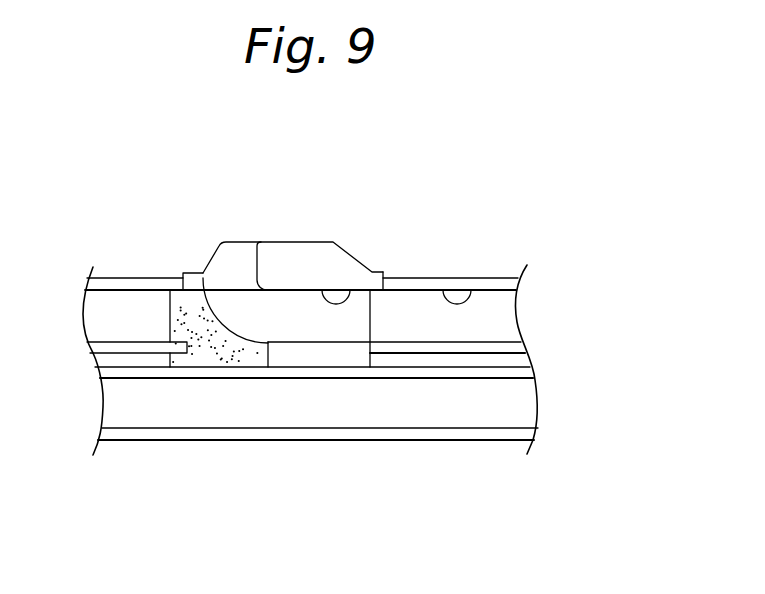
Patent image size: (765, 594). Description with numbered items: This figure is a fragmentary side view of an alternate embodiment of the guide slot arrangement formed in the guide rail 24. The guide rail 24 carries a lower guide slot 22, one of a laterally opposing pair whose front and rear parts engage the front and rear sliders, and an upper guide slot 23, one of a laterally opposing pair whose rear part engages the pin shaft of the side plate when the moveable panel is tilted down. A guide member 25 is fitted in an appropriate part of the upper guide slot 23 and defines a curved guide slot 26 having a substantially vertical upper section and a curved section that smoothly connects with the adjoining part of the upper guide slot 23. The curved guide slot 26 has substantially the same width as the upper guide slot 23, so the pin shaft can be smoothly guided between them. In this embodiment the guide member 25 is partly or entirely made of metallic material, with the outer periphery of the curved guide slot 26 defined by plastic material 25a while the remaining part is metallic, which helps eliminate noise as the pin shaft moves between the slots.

The lower guide slot 22 is at (410, 428).
The upper guide slot 23 is at (468, 292).
The guide rail 24 is at (531, 356).
The guide member 25 is at (318, 247).
The plastic material 25a is at (212, 302).
The curved guide slot 26 is at (348, 298).